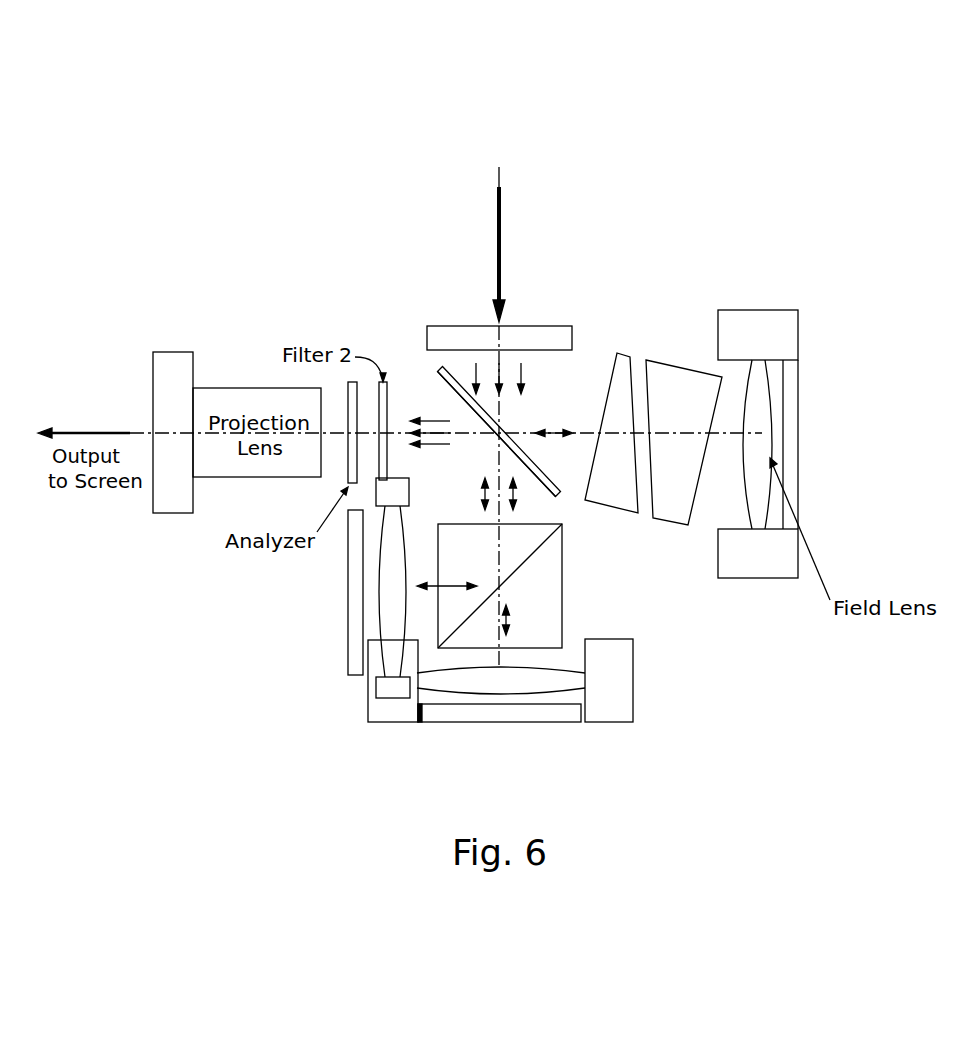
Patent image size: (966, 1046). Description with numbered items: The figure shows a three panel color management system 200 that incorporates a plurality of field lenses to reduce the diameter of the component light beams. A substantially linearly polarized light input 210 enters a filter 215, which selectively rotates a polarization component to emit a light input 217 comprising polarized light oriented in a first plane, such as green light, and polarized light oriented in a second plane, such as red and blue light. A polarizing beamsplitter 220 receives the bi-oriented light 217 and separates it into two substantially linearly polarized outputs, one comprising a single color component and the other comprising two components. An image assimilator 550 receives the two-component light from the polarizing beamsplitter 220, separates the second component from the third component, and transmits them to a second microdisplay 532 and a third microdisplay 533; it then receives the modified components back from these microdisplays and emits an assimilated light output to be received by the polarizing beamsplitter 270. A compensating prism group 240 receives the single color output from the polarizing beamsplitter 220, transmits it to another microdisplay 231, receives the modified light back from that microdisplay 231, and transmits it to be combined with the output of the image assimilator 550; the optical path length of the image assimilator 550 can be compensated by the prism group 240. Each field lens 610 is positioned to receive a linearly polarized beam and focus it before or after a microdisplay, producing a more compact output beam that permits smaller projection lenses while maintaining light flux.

The color management system 200 is at (175, 230).
The linear polarized light input 210 is at (453, 115).
The filter 215 is at (575, 321).
The light input 217 is at (521, 363).
The polarizing beamsplitter 220 is at (436, 366).
The microdisplay 231 is at (798, 437).
The compensating prism group 240 is at (617, 353).
The polarizing beamsplitter 270 is at (557, 497).
The second microdisplay 532 is at (503, 752).
The third microdisplay 533 is at (348, 607).
The image assimilator 550 is at (518, 576).
The field lens 610 is at (494, 695).